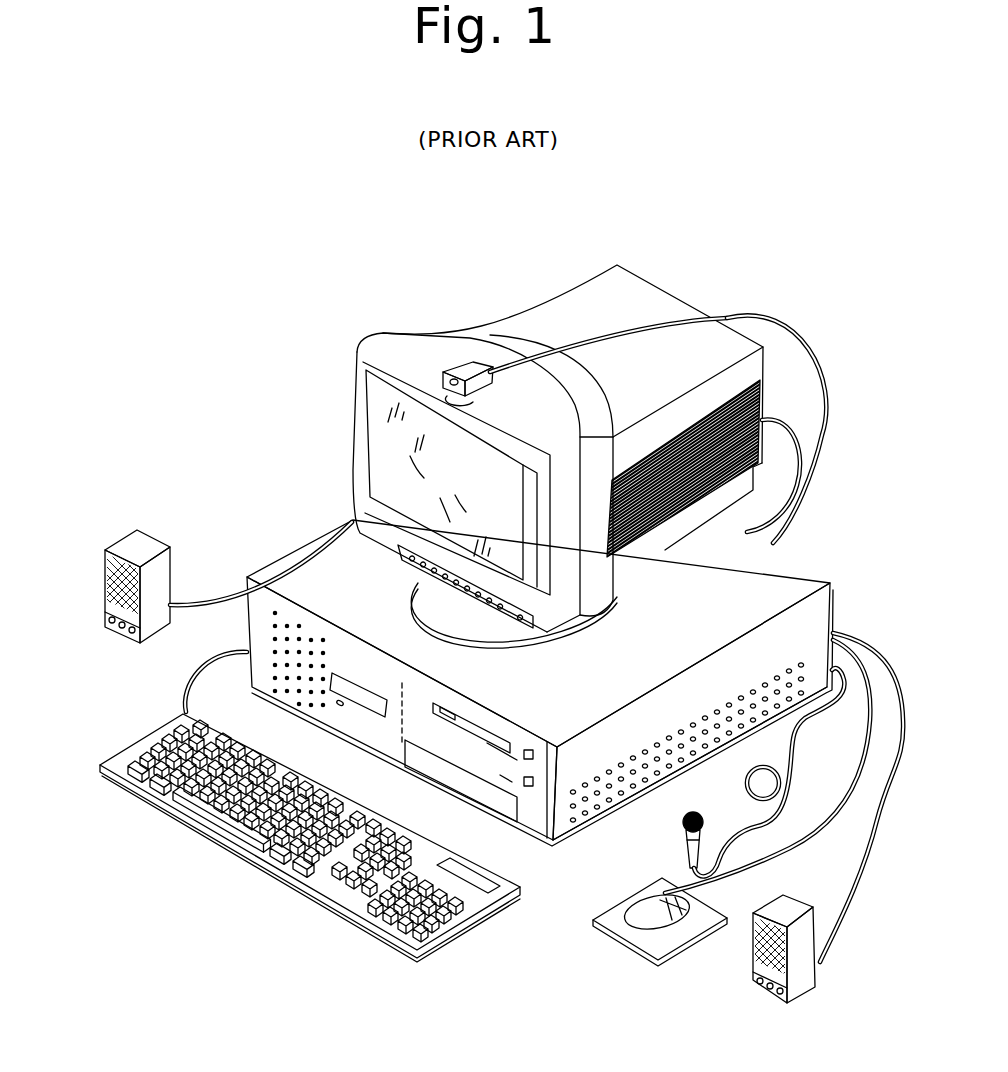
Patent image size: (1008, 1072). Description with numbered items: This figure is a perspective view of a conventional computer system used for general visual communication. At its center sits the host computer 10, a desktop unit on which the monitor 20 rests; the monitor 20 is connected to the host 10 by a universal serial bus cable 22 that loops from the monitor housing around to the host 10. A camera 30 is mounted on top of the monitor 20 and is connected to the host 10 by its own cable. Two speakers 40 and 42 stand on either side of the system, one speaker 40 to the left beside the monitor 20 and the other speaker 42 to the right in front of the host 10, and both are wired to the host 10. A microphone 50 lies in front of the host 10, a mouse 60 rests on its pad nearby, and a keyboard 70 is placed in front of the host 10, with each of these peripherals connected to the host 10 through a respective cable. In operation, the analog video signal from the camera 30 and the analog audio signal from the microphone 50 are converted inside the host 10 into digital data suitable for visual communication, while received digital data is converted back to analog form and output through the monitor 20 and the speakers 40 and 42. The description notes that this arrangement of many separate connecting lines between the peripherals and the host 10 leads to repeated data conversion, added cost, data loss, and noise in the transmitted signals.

The host 10 is at (786, 577).
The monitor 20 is at (668, 300).
The universal serial bus (USB) cable 22 is at (796, 448).
The camera 30 is at (471, 362).
The speaker 40 is at (144, 543).
The speaker 42 is at (801, 985).
The microphone 50 is at (684, 838).
The mouse 60 is at (667, 942).
The keyboard 70 is at (448, 924).